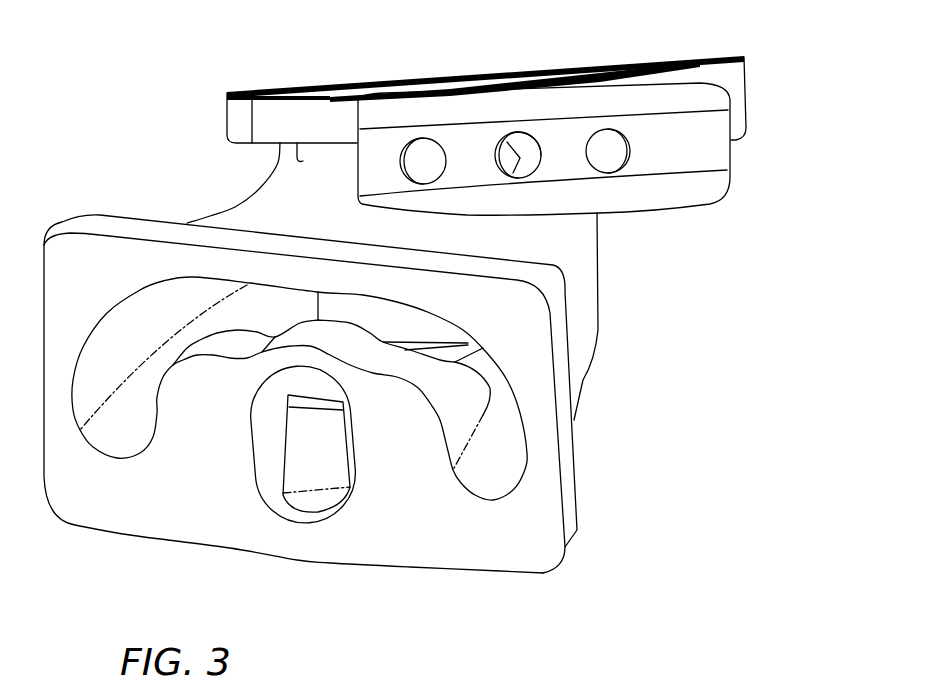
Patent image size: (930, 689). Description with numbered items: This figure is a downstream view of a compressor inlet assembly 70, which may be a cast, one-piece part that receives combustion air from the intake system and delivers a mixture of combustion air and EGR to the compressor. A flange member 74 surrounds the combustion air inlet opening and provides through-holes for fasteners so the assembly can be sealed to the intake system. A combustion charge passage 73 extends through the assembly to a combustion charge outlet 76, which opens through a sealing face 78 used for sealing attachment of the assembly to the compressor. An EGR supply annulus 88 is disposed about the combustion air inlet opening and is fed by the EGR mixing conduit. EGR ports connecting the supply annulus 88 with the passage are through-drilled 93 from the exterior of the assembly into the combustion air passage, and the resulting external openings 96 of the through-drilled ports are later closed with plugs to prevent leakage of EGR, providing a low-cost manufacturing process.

The compressor inlet assembly 70 is at (629, 255).
The combustion charge passage 73 is at (517, 133).
The flange member 74 is at (252, 92).
The combustion charge outlet 76 is at (508, 452).
The sealing face 78 is at (523, 340).
The EGR supply annulus 88 is at (616, 139).
The through-drilled ports 93 is at (529, 145).
The external openings 96 is at (401, 156).